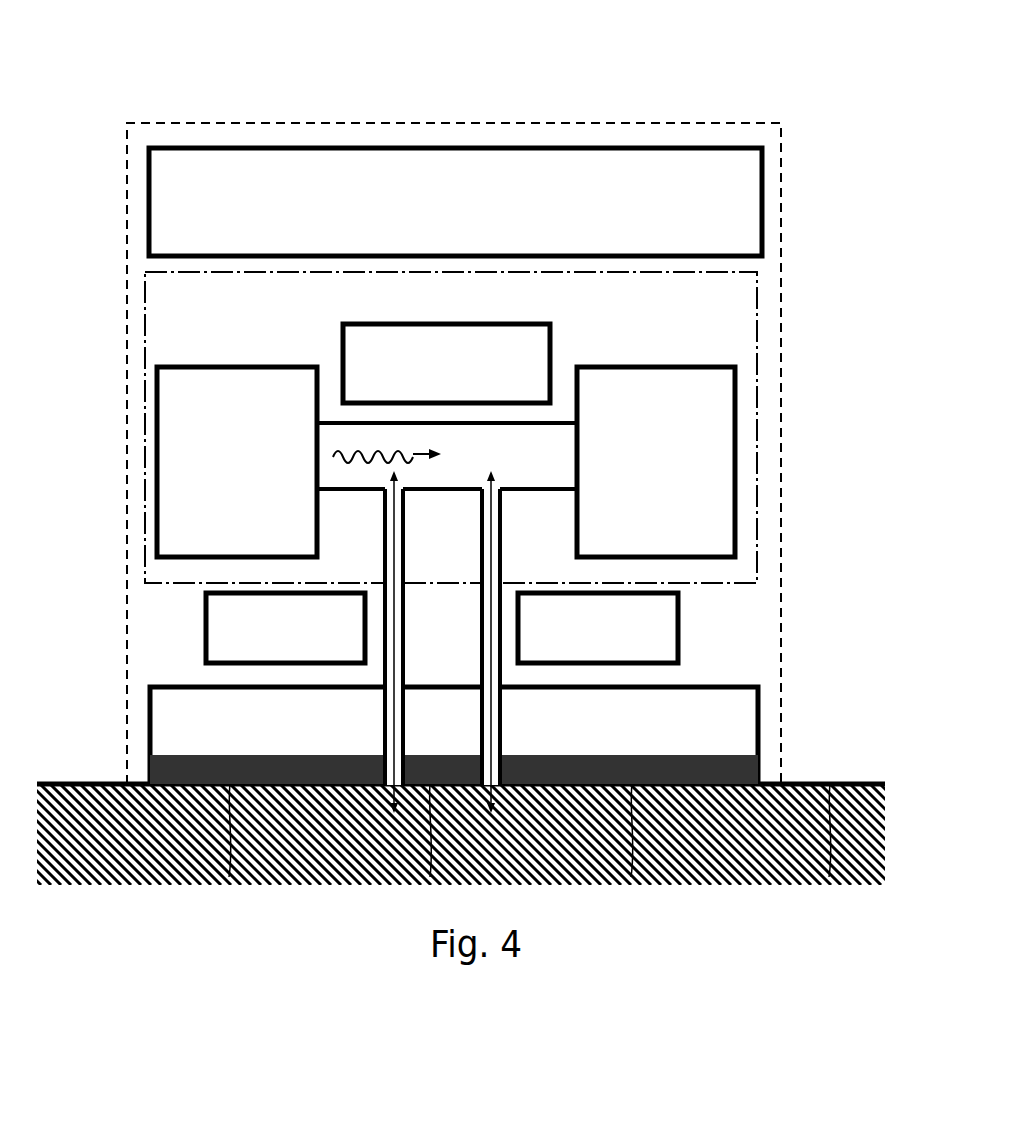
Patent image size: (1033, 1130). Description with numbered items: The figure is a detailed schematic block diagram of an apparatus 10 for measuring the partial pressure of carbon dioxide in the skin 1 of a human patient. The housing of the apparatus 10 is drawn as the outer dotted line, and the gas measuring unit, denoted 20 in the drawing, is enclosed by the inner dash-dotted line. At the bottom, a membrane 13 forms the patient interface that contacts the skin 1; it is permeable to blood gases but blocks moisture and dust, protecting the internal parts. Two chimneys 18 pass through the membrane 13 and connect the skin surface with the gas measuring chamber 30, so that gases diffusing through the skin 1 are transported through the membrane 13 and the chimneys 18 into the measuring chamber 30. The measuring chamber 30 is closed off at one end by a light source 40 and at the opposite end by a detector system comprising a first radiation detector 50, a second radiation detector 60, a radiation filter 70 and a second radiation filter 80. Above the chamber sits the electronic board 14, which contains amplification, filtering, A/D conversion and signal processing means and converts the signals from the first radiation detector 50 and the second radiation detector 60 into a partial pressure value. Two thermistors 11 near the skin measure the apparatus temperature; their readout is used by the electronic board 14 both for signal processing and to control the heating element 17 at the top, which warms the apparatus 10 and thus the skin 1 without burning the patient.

The skin 1 is at (728, 852).
The apparatus 10 is at (305, 118).
The thermistors 11 is at (213, 622).
The membrane 13 is at (760, 767).
The electronic board 14 is at (352, 343).
The heating element 17 is at (727, 205).
The chimneys 18 is at (483, 562).
The module enclosure 20 is at (705, 337).
The gas measuring chamber 30 is at (515, 455).
The light source 40 is at (180, 408).
The first radiation detector 50 is at (761, 462).
The second radiation detector 60 is at (761, 462).
The radiation filter 70 is at (761, 462).
The second radiation filter 80 is at (698, 462).